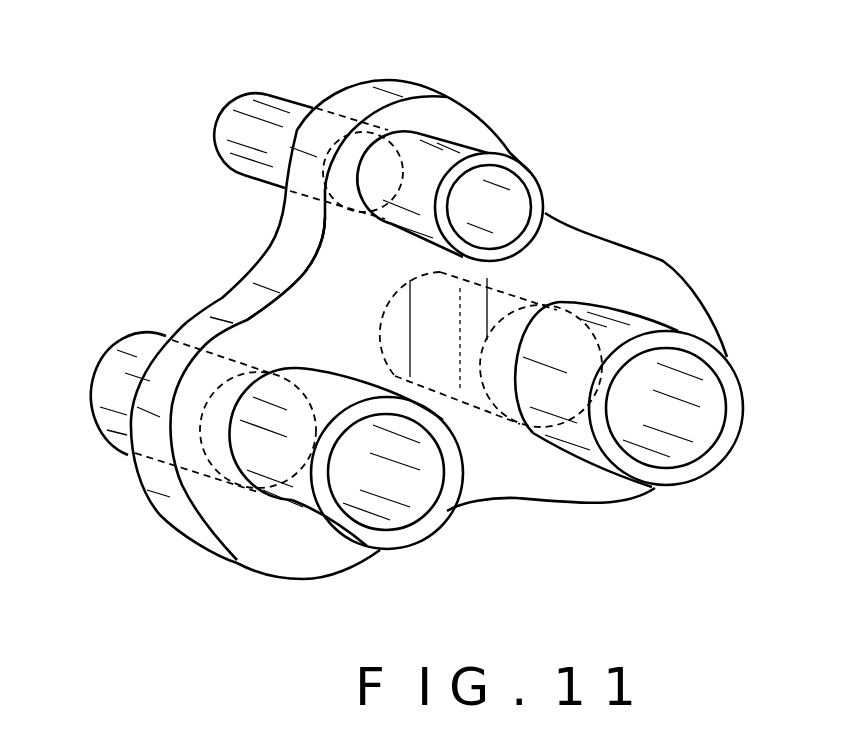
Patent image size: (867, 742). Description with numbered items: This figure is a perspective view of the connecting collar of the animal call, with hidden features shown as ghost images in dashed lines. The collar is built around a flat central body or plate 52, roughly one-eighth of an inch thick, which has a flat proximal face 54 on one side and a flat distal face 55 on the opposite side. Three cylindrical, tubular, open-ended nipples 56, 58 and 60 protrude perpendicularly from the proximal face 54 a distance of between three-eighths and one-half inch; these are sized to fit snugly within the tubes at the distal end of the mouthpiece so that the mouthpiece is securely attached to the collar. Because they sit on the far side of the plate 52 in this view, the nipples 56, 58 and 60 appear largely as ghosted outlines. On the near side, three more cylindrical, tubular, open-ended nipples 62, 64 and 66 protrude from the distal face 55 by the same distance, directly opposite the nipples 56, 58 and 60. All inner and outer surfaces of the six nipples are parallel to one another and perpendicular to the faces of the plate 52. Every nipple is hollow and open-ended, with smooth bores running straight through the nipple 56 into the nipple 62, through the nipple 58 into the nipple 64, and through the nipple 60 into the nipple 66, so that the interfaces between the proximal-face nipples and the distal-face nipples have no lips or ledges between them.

The plate 52 is at (341, 92).
The proximal face 54 is at (133, 481).
The distal face 55 is at (372, 278).
The nipple 56 is at (128, 368).
The nipple 58 is at (513, 293).
The nipple 60 is at (237, 117).
The nipple 62 is at (297, 366).
The nipple 64 is at (613, 333).
The nipple 66 is at (443, 157).